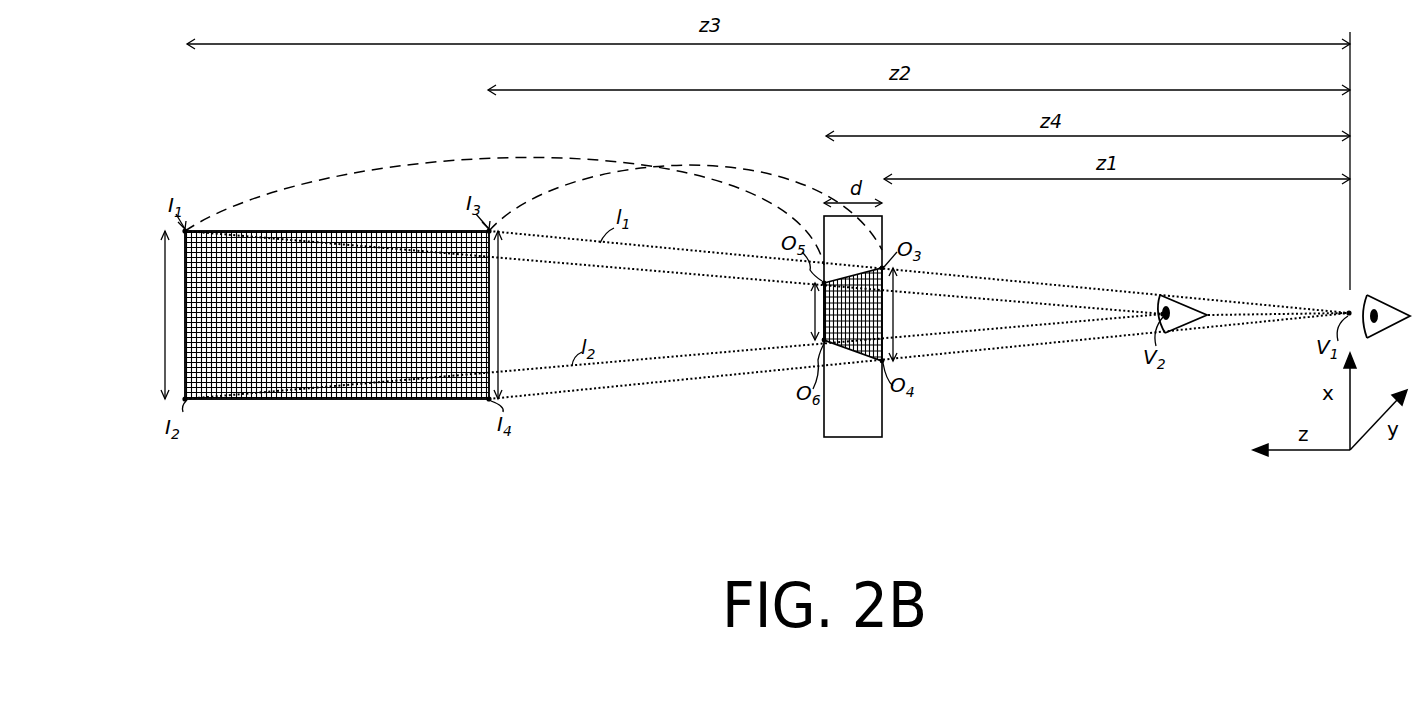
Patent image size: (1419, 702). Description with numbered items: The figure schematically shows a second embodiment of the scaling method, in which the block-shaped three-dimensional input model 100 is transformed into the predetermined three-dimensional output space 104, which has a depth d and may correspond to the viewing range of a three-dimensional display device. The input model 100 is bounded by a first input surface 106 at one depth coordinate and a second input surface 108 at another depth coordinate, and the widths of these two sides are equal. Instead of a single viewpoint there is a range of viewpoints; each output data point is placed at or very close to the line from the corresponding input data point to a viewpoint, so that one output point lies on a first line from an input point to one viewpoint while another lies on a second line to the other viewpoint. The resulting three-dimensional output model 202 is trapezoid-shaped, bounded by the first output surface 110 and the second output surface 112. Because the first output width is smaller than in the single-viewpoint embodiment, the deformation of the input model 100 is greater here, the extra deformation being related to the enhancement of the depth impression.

The three-dimensional input model 100 is at (306, 380).
The predetermined three-dimensional output space 104 is at (884, 437).
The first input surface 106 is at (186, 331).
The second input surface 108 is at (490, 335).
The first output surface 110 is at (822, 340).
The second output surface 112 is at (884, 340).
The three-dimensional output model 202 is at (852, 345).